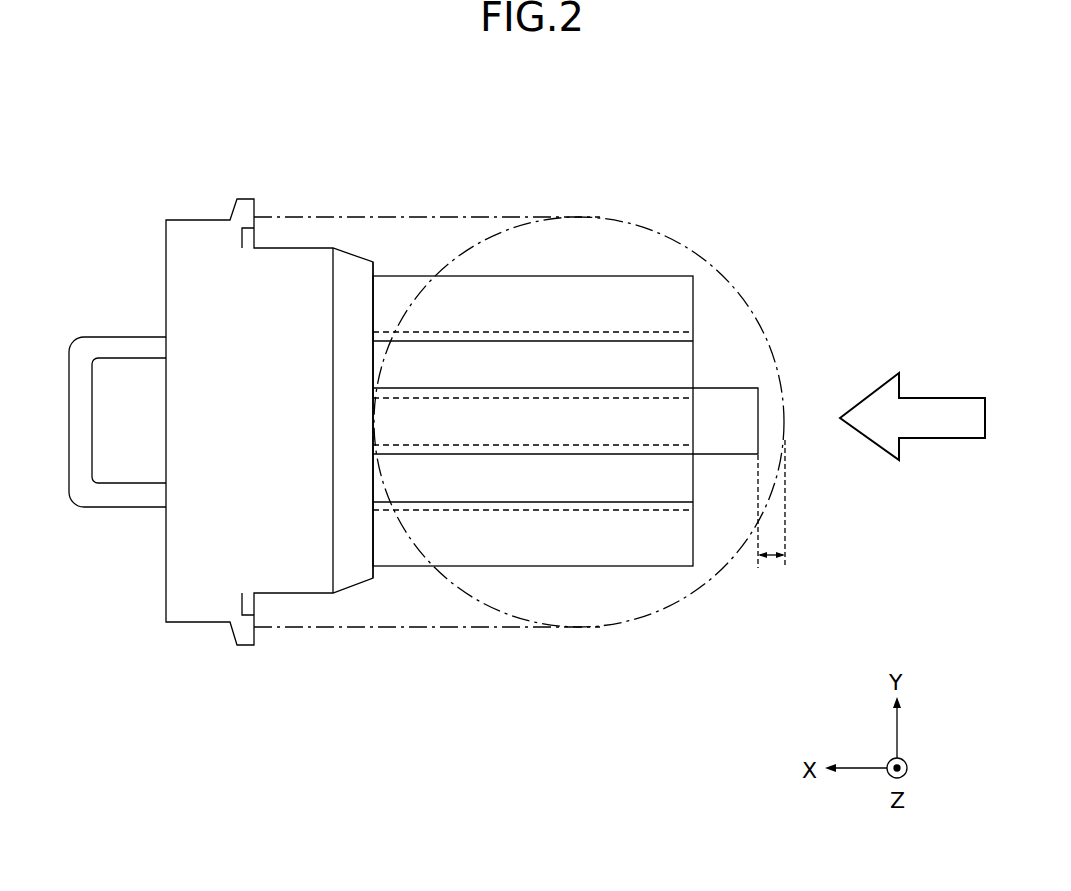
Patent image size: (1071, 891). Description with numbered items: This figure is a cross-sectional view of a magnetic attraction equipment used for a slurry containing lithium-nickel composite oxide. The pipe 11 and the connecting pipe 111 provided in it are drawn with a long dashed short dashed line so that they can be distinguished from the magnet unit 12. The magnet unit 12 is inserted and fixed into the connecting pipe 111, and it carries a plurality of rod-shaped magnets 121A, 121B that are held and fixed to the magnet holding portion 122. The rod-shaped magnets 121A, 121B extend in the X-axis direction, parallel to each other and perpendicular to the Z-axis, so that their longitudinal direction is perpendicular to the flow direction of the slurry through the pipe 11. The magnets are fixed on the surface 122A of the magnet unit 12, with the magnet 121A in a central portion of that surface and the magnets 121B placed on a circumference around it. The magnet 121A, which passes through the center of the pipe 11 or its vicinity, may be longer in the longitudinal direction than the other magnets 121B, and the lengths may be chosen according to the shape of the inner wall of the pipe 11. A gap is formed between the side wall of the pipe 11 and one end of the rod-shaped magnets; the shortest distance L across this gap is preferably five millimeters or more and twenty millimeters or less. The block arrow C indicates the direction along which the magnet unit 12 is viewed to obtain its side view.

The pipe 11 is at (735, 275).
The magnet unit 12 is at (152, 221).
The connecting pipe 111 is at (378, 215).
The rod-shaped magnet 121A is at (728, 438).
The rod-shaped magnets 121B is at (570, 276).
The magnet holding portion 122 is at (184, 545).
The surface 122A is at (380, 586).
The shortest distance L is at (771, 520).
The block arrow C is at (942, 398).